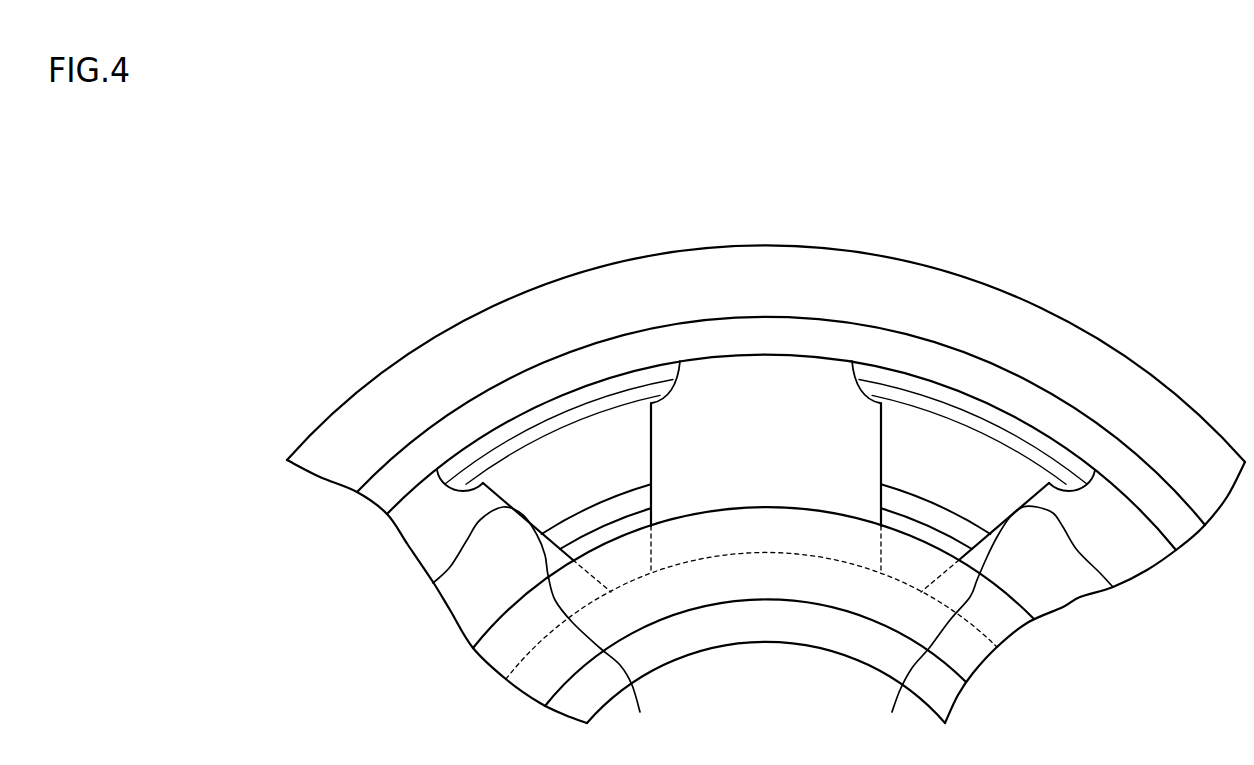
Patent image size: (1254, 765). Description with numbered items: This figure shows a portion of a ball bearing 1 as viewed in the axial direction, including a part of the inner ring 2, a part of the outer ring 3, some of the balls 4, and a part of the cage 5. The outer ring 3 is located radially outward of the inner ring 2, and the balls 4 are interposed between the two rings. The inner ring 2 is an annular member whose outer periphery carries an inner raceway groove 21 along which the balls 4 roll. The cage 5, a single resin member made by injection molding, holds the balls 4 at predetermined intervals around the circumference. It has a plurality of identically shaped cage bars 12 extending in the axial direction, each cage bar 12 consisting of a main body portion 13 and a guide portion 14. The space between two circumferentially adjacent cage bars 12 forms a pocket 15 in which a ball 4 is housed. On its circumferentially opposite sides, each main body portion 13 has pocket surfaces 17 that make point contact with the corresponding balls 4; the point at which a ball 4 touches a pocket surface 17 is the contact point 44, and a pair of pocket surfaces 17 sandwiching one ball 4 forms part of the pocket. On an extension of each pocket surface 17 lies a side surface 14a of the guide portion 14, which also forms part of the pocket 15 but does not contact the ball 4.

The ball bearing 1 is at (805, 227).
The inner ring 2 is at (767, 577).
The outer ring 3 is at (690, 272).
The balls 4 is at (765, 377).
The cage 5 is at (1005, 482).
The cage bars 12 is at (536, 458).
The main body portion 13 is at (573, 490).
The guide portion 14 is at (597, 540).
The side surface 14a is at (858, 517).
The pocket 15 is at (667, 494).
The pocket surfaces 17 is at (680, 360).
The inner raceway groove 21 is at (763, 545).
The contact point 44 is at (655, 431).